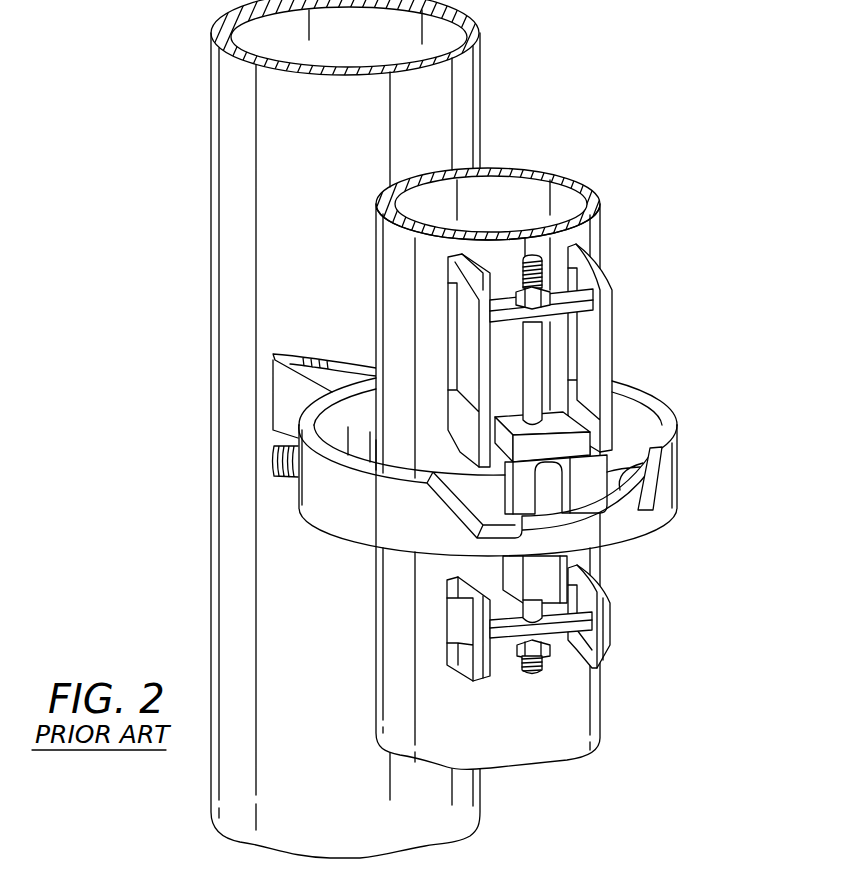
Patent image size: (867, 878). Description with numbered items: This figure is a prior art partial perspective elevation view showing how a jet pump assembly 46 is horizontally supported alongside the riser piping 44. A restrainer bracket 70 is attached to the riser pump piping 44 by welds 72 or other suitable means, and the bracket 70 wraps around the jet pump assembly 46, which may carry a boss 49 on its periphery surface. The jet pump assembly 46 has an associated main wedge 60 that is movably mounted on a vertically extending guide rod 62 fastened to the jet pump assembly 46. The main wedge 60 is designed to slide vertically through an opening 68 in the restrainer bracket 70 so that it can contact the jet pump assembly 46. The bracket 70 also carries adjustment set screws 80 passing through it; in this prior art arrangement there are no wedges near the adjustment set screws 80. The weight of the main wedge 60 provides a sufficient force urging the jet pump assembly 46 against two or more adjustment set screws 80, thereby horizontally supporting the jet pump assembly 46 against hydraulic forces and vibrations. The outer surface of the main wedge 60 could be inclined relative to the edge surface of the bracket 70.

The riser piping 44 is at (210, 193).
The jet pump assembly 46 is at (660, 214).
The welds 72 is at (333, 363).
The adjustment set screws 80 is at (290, 477).
The boss 49 is at (388, 442).
The guide rod 62 is at (533, 355).
The main wedge 60 is at (548, 443).
The opening 68 is at (620, 492).
The restrainer bracket 70 is at (338, 567).